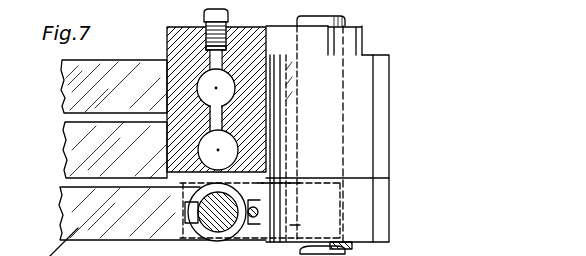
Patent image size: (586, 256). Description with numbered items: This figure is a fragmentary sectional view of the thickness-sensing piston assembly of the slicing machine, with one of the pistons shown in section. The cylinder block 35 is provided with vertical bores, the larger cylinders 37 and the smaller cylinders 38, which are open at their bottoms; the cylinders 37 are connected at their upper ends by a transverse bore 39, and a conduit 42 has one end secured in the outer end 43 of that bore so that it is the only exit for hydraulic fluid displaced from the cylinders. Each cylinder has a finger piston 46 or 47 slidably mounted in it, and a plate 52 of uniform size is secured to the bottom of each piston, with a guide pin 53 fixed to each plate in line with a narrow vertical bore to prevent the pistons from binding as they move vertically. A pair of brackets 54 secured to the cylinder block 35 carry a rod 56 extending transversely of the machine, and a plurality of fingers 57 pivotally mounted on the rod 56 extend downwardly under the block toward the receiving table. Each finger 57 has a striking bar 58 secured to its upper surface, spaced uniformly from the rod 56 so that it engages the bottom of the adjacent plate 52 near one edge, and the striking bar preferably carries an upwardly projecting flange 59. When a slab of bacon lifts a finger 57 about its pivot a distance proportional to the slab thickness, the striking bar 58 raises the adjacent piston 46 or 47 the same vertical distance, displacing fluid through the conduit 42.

The cylinder block 35 is at (177, 80).
The cylinder 37 is at (200, 150).
The cylinder 38 is at (192, 238).
The transverse bore 39 is at (228, 124).
The conduit 42 is at (228, 18).
The outer end of the bore 43 is at (207, 44).
The finger piston 46 is at (207, 223).
The finger piston 47 is at (221, 240).
The plate 52 is at (262, 181).
The guide pin 53 is at (258, 207).
The bracket 54 is at (355, 43).
The rod 56 is at (352, 244).
The finger 57 is at (74, 139).
The striking bar 58 is at (190, 208).
The upwardly projecting flange 59 is at (298, 223).